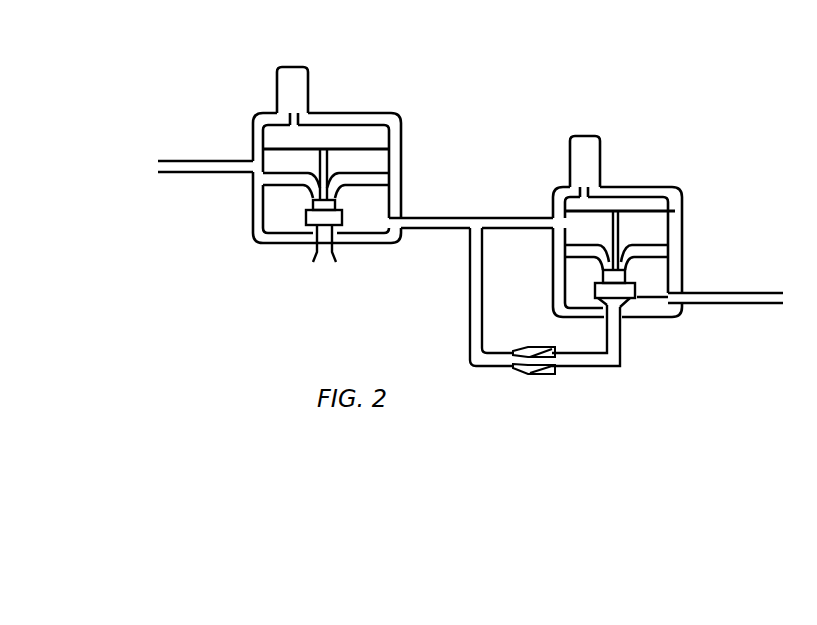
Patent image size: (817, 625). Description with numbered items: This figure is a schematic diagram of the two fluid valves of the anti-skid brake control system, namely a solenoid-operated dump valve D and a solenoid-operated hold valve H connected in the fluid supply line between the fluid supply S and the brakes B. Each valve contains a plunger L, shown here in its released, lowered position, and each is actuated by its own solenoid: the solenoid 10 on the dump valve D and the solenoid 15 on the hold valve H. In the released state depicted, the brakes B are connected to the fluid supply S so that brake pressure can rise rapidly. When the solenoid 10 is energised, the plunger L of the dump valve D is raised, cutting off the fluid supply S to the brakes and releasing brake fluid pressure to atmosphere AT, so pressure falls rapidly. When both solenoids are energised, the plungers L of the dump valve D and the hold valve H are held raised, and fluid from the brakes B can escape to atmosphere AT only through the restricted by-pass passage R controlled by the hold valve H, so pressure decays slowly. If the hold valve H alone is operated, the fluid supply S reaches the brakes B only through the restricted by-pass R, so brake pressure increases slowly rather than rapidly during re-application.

The solenoid of the dump valve 10 is at (291, 87).
The solenoid of the hold valve 15 is at (581, 152).
The dump valve D is at (396, 114).
The hold valve H is at (664, 187).
The fluid supply S is at (158, 164).
The brakes B is at (768, 297).
The atmosphere AT is at (322, 258).
The plunger L is at (312, 216).
The restricted by-pass passage R is at (523, 368).